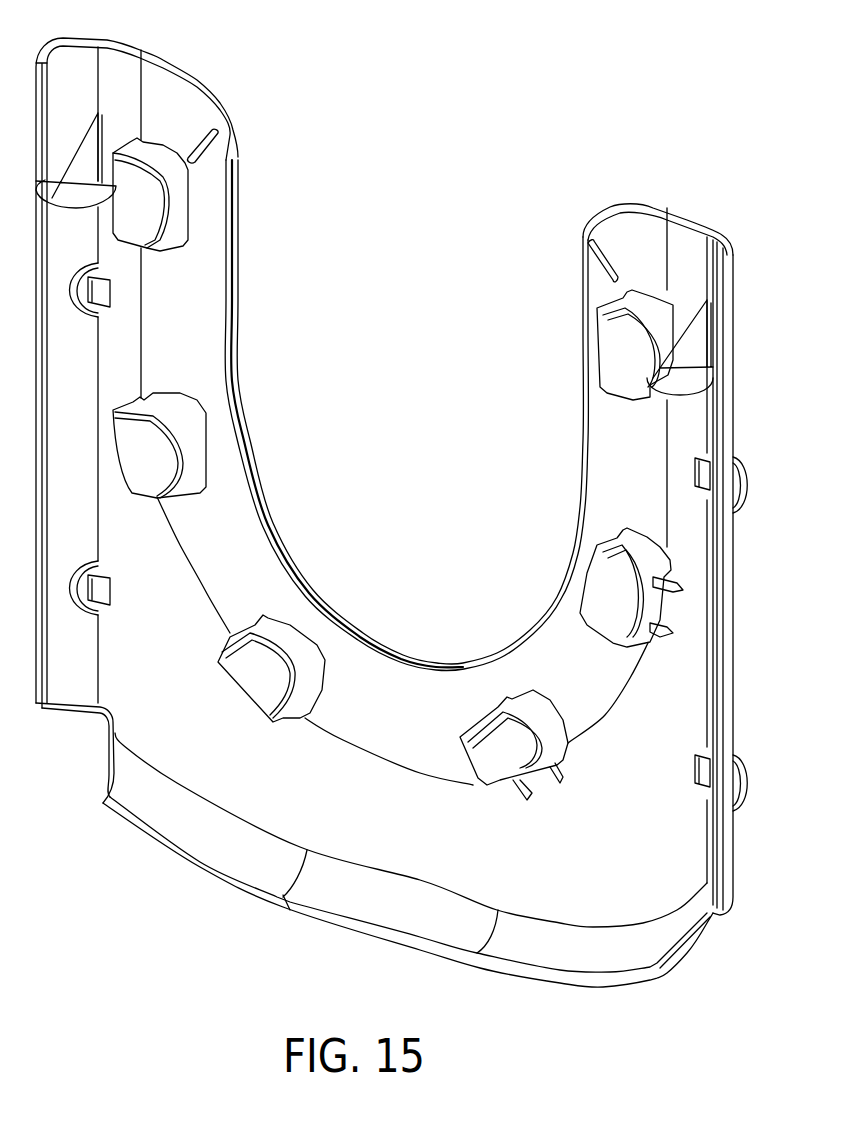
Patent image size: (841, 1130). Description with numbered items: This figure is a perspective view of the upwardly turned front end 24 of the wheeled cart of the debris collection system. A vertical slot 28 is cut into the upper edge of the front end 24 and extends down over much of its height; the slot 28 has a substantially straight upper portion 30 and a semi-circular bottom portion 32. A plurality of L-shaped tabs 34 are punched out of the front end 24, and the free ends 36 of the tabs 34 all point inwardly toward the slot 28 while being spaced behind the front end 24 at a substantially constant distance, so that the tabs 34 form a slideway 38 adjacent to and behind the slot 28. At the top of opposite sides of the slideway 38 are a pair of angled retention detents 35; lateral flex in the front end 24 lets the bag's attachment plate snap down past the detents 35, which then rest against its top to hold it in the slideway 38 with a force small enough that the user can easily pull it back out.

The front end 24 is at (654, 203).
The vertical slot 28 is at (243, 163).
The upper portion 30 is at (243, 227).
The bottom portion 32 is at (273, 523).
The L-shaped tab 34 is at (594, 361).
The angled retention detent 35 is at (192, 157).
The free end 36 is at (617, 377).
The slideway 38 is at (163, 128).